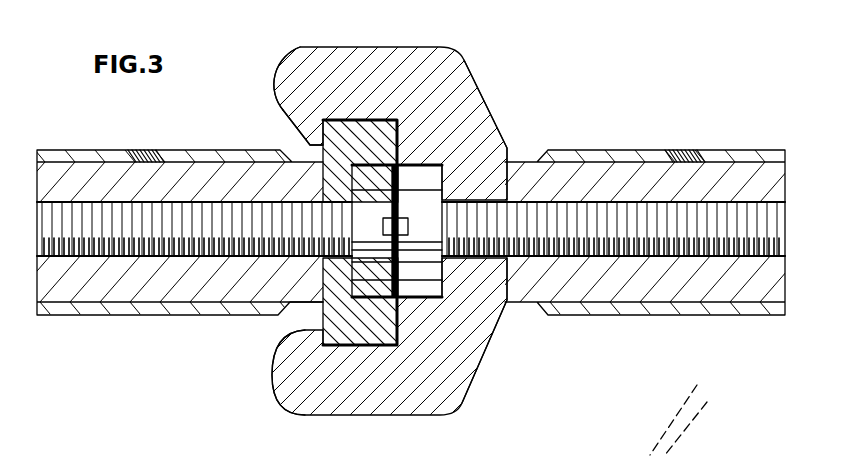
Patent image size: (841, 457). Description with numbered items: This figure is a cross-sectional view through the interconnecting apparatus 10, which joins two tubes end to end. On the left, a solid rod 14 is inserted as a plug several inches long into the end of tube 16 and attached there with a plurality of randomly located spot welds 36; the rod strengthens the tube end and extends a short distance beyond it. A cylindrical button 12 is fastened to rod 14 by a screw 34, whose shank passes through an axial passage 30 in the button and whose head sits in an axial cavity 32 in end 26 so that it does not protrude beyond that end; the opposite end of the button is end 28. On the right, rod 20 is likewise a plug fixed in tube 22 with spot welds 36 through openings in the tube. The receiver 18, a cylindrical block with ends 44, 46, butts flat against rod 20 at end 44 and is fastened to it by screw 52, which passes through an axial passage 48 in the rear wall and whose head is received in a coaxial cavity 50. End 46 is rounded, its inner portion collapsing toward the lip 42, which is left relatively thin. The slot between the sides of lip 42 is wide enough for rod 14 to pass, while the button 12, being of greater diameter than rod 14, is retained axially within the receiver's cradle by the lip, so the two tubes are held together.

The interconnecting apparatus 10 is at (420, 232).
The button 12 is at (420, 211).
The solid rod 14 is at (420, 242).
The tube 16 is at (163, 317).
The receiver 18 is at (420, 251).
The rod 20 is at (420, 240).
The tube 22 is at (751, 318).
The end 26 is at (398, 320).
The end 28 is at (272, 370).
The axial passage 30 is at (298, 305).
The axial cavity 32 is at (371, 168).
The screw 34 is at (208, 210).
The spot welds 36 is at (152, 150).
The lip 42 is at (311, 145).
The end 44 is at (506, 283).
The end 46 is at (271, 87).
The axial passage 48 is at (478, 197).
The cavity 50 is at (418, 164).
The screw 52 is at (610, 210).